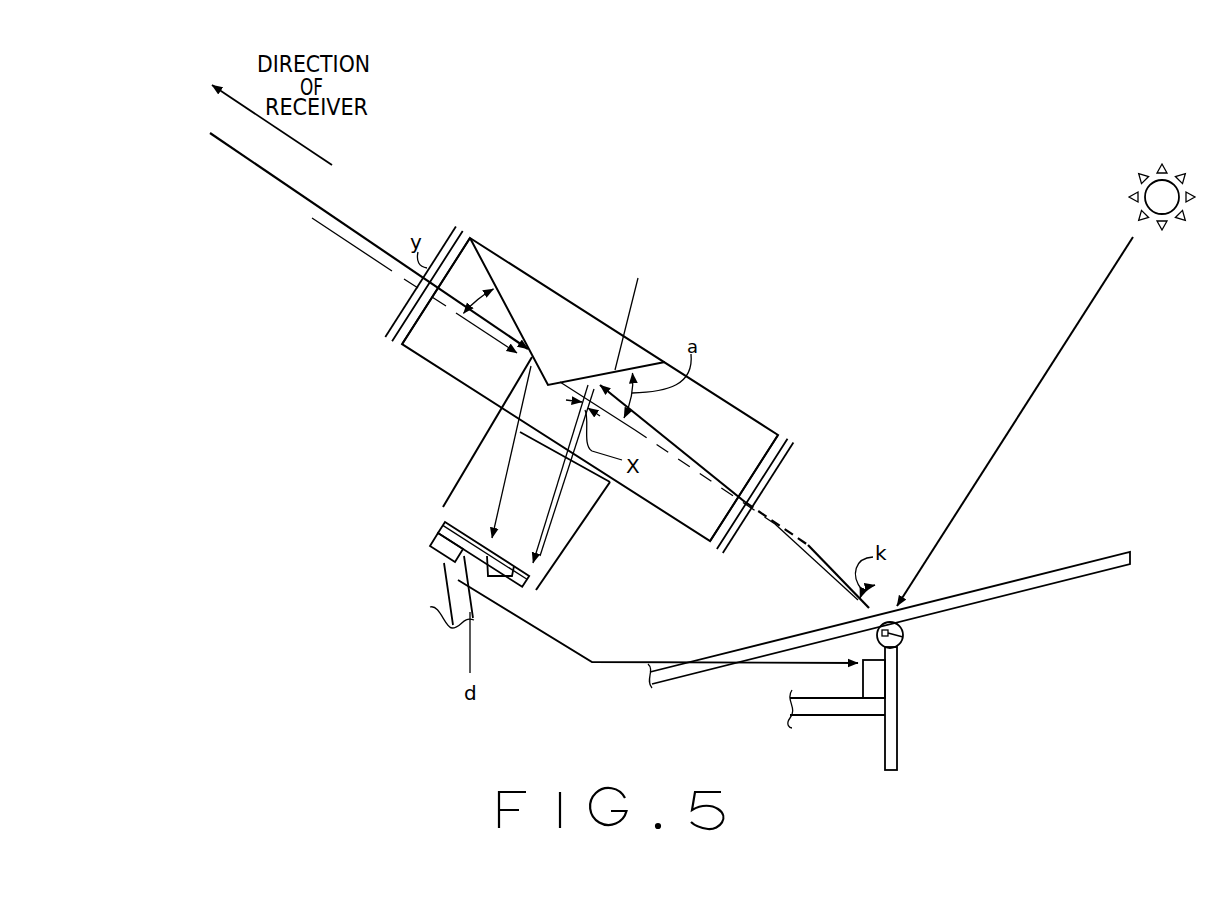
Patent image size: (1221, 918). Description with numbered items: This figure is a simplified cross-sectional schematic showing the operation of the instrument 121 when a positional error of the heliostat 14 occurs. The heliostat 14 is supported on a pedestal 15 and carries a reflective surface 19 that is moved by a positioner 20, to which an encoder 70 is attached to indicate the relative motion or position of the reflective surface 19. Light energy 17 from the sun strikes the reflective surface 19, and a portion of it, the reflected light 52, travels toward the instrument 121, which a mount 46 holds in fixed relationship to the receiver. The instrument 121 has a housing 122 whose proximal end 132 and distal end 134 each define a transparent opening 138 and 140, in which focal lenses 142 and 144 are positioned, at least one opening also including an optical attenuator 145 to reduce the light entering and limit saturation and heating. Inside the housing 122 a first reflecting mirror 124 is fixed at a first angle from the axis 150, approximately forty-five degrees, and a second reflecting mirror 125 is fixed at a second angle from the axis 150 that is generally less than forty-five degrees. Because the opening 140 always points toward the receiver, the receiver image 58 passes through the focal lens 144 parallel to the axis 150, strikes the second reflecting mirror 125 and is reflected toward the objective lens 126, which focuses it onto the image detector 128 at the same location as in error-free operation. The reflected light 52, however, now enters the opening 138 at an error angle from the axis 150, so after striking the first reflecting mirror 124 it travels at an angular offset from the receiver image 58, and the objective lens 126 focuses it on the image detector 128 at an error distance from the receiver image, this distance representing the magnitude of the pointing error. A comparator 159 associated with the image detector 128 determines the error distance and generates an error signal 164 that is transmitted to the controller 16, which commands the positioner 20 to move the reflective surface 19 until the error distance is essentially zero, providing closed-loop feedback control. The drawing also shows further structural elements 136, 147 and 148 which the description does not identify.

The heliostat 14 is at (1056, 493).
The pedestal 15 is at (898, 747).
The controller 16 is at (877, 677).
The light energy 17 is at (1083, 310).
The reflective surface 19 is at (1083, 557).
The positioner 20 is at (905, 638).
The mount 46 is at (430, 607).
The reflected light 52 is at (542, 537).
The receiver image 58 is at (246, 158).
The encoder 70 is at (904, 628).
The instrument 121 is at (667, 309).
The housing 122 is at (688, 407).
The first reflecting mirror 124 is at (640, 313).
The second reflecting mirror 125 is at (512, 312).
The objective lens 126 is at (590, 478).
The image detector 128 is at (445, 522).
The proximal end 132 is at (795, 445).
The distal end 134 is at (473, 238).
The lens tube 136 is at (443, 496).
The transparent opening 138 is at (792, 487).
The transparent opening 140 is at (398, 297).
The focal lens 142 is at (795, 450).
The focal lens 144 is at (453, 227).
The optical attenuator 145 is at (457, 270).
The bracket 147 is at (537, 592).
The tube wall 148 is at (500, 413).
The axis 150 is at (340, 239).
The comparator 159 is at (433, 549).
The error signal 164 is at (592, 664).